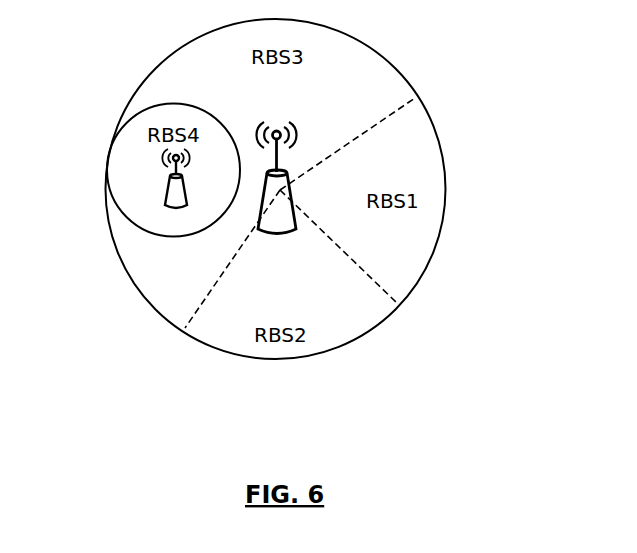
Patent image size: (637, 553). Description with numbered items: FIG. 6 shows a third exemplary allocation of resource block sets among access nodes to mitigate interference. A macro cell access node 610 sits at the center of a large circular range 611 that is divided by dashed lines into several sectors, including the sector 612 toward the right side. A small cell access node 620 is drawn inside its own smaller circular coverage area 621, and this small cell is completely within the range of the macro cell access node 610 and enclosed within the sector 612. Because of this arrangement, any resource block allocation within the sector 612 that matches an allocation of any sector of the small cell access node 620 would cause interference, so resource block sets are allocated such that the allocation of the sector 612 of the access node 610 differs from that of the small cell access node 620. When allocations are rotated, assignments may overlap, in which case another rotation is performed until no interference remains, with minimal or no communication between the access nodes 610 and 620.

The macro cell access node 610 is at (340, 249).
The cell coverage area 611 is at (142, 292).
The sector 612 is at (380, 119).
The small cell access node 620 is at (166, 207).
The small cell coverage area 621 is at (143, 113).